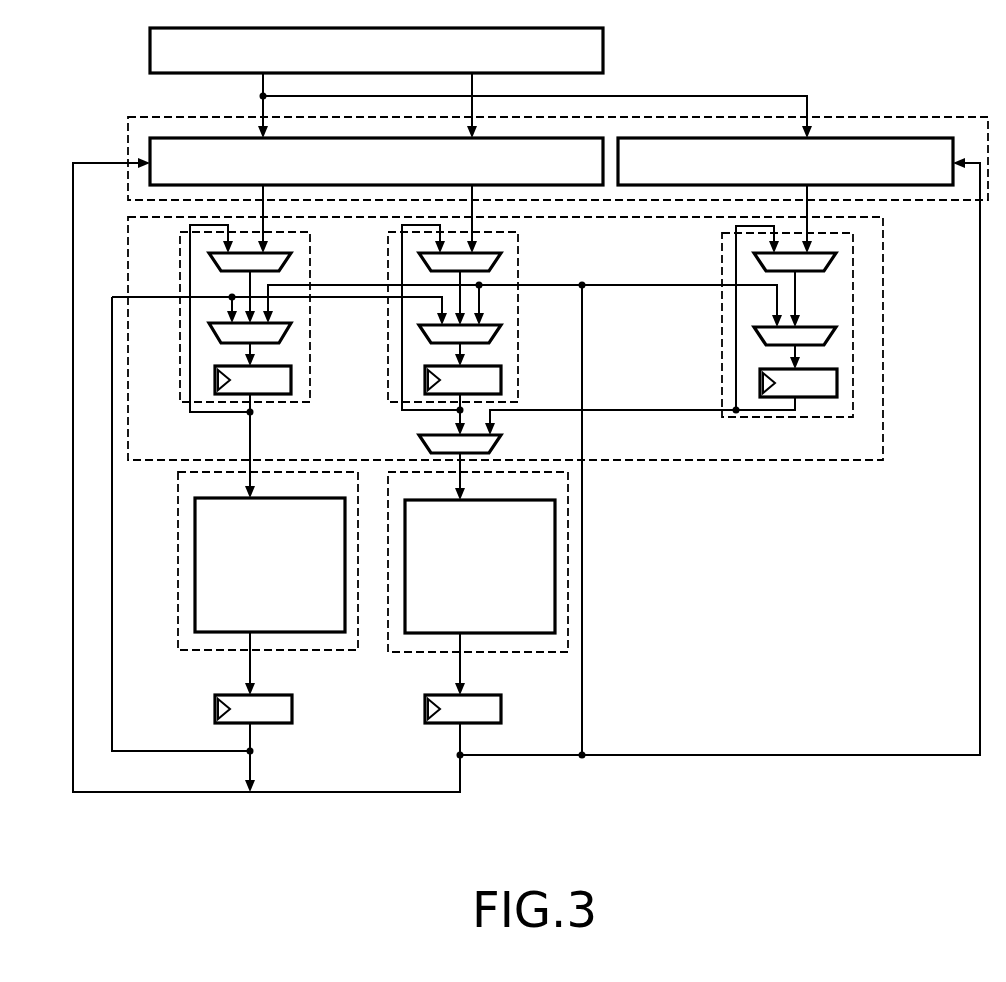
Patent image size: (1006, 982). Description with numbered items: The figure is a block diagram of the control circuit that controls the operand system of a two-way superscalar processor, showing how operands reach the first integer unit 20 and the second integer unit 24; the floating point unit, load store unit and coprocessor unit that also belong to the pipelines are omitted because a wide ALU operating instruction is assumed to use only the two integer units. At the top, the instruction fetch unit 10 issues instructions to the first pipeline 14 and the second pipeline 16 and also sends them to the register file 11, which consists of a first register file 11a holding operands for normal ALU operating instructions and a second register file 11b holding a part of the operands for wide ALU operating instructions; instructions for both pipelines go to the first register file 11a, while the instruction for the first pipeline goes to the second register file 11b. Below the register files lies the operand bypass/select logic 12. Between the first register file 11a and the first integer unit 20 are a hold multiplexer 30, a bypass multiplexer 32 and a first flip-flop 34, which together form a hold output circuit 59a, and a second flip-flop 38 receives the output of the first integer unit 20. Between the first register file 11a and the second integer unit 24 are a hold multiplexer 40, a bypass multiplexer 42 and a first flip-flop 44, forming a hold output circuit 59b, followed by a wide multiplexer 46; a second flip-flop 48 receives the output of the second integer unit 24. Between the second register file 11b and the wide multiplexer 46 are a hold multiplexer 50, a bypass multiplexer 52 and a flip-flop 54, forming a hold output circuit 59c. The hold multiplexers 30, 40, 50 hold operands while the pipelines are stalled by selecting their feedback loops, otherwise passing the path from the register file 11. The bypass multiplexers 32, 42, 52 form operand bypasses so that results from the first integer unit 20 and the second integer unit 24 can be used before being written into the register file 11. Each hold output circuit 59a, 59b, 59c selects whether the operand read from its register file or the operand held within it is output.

The instruction fetch unit 10 is at (605, 55).
The register file 11 is at (935, 117).
The first register file 11a is at (180, 137).
The second register file 11b is at (866, 137).
The operand bypass/select logic 12 is at (883, 232).
The first pipeline 14 is at (178, 522).
The second pipeline 16 is at (568, 518).
The first integer unit 20 is at (195, 585).
The second integer unit 24 is at (555, 592).
The hold multiplexer 30 is at (290, 260).
The bypass multiplexer 32 is at (290, 333).
The first flip-flop 34 is at (291, 380).
The second flip-flop 38 is at (292, 711).
The hold multiplexer 40 is at (500, 258).
The bypass multiplexer 42 is at (500, 335).
The first flip-flop 44 is at (501, 380).
The wide multiplexer 46 is at (500, 438).
The second flip-flop 48 is at (501, 712).
The hold multiplexer 50 is at (836, 262).
The bypass multiplexer 52 is at (836, 338).
The flip-flop 54 is at (837, 381).
The hold output circuit 59a is at (280, 402).
The hold output circuit 59b is at (518, 232).
The hold output circuit 59c is at (853, 252).